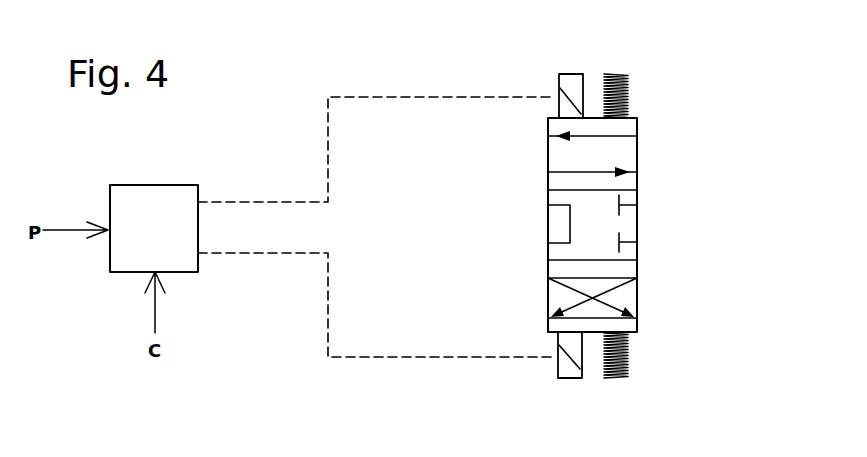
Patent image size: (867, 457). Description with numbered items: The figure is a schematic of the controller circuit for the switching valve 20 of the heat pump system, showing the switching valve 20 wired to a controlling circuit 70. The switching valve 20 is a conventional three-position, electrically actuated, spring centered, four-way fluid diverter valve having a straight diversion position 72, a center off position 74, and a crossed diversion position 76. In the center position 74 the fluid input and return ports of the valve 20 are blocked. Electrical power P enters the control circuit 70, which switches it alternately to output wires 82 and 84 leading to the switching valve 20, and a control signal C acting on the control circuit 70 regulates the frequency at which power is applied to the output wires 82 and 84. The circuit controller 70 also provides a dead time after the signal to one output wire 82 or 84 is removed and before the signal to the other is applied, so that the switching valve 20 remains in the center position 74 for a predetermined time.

The switching valve 20 is at (660, 117).
The control circuit 70 is at (167, 185).
The straight diversion position 72 is at (637, 151).
The center off position 74 is at (637, 226).
The crossed diversion position 76 is at (637, 296).
The output wire 82 is at (517, 96).
The output wire 84 is at (513, 358).